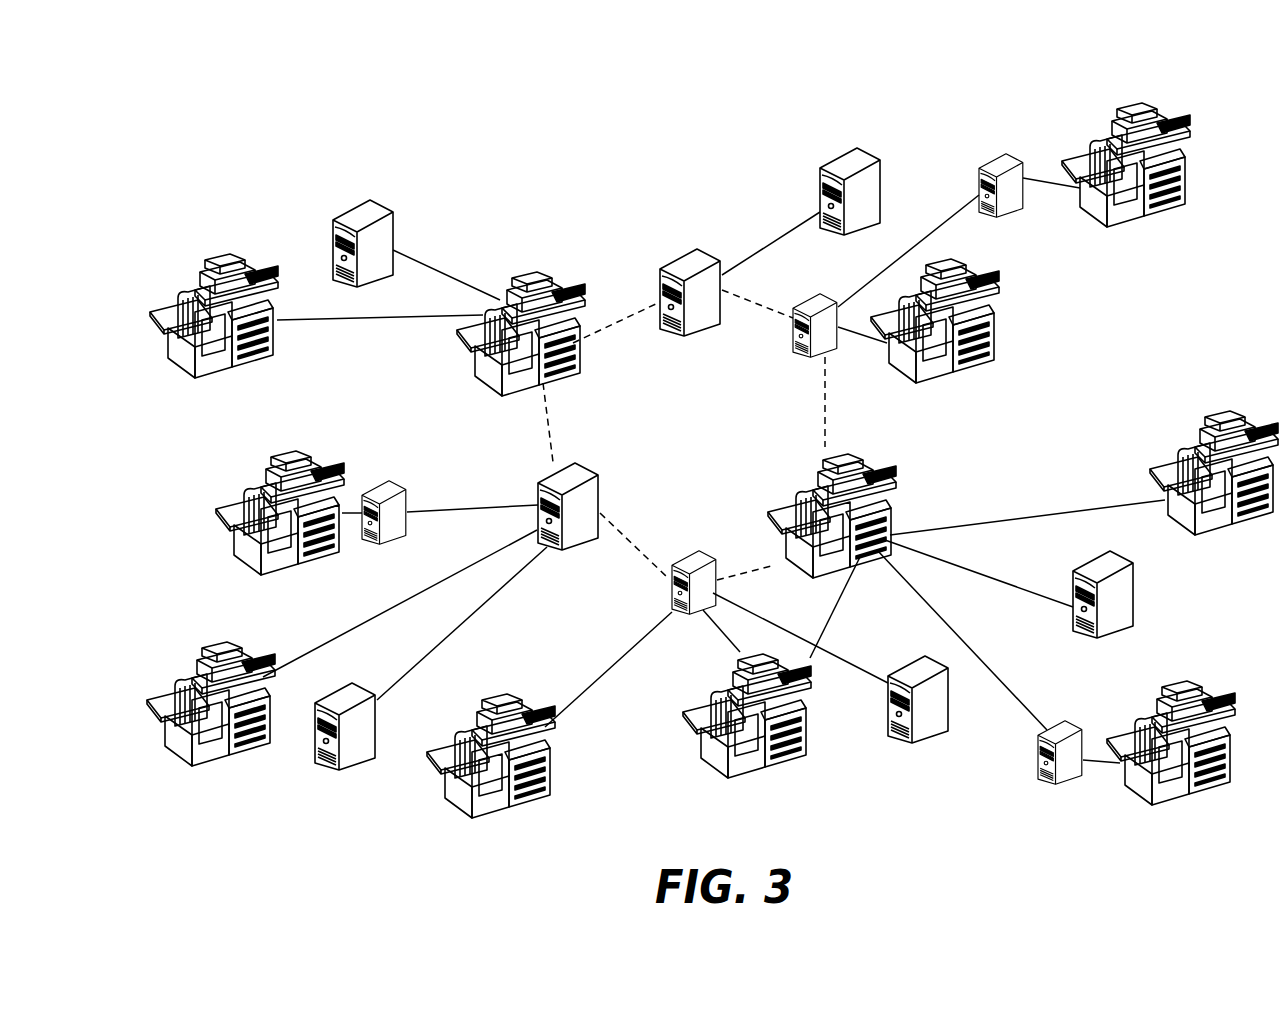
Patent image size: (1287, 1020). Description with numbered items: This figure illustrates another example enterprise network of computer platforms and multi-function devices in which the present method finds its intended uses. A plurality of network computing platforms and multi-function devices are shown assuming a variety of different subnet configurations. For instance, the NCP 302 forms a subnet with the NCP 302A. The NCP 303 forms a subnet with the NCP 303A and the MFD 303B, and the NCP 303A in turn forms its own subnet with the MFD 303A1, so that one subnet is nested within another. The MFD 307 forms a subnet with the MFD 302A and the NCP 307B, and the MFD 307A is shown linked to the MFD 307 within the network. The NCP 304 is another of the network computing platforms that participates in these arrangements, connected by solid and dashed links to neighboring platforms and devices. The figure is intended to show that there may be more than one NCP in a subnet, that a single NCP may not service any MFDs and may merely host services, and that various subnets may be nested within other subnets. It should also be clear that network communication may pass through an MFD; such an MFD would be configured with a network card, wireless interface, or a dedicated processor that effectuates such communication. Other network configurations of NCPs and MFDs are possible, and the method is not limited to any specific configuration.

The network computing platform 302 is at (685, 246).
The network computing platform 302A is at (836, 146).
The network computing platform 303 is at (806, 292).
The network computing platform 303A is at (991, 151).
The multi-function device 303A1 is at (1183, 110).
The multi-function device 303B is at (999, 291).
The network computing platform 304 is at (689, 548).
The multi-function device 307 is at (517, 262).
The multi-function device 307A is at (222, 246).
The network computing platform 307B is at (358, 192).